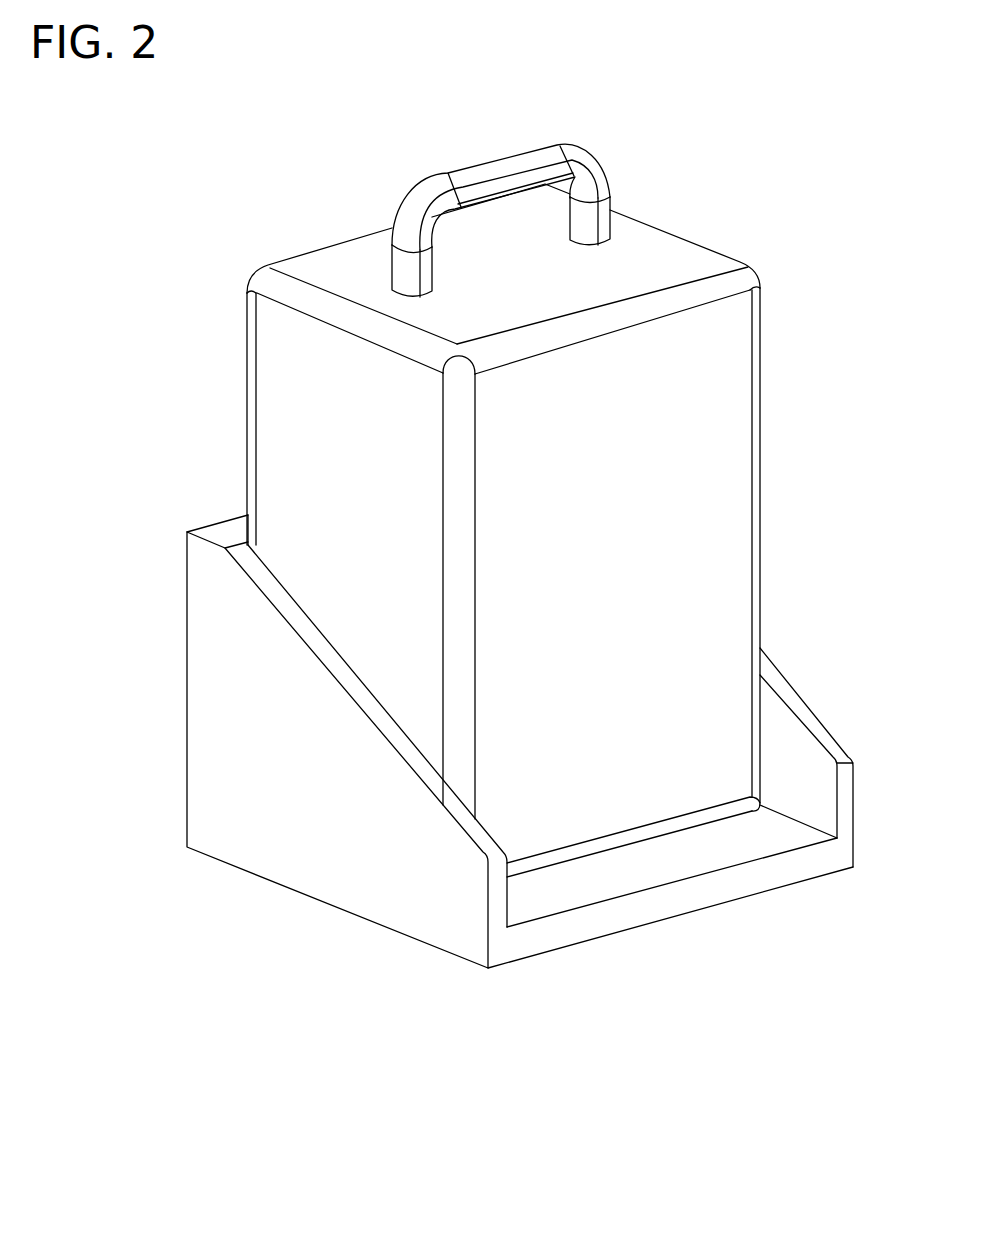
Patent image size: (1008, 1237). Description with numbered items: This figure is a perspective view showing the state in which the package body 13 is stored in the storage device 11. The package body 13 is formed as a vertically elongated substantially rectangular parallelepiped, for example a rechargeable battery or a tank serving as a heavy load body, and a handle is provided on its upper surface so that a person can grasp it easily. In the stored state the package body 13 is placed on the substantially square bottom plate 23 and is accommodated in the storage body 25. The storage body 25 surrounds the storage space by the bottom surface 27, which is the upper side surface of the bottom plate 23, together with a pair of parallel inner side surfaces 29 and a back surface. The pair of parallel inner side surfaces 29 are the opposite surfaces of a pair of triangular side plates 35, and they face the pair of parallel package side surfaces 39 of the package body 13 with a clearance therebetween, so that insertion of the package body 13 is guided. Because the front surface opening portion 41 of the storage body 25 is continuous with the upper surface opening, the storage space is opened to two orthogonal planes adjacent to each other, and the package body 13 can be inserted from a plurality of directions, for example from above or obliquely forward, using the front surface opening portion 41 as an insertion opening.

The storage device 11 is at (491, 744).
The package body 13 is at (469, 501).
The bottom plate 23 is at (670, 945).
The storage body 25 is at (202, 517).
The bottom surface 27 is at (550, 902).
The inner side surface 29 is at (828, 741).
The side plate 35 is at (305, 632).
The package side surface 39 is at (273, 350).
The front surface opening portion 41 is at (803, 796).